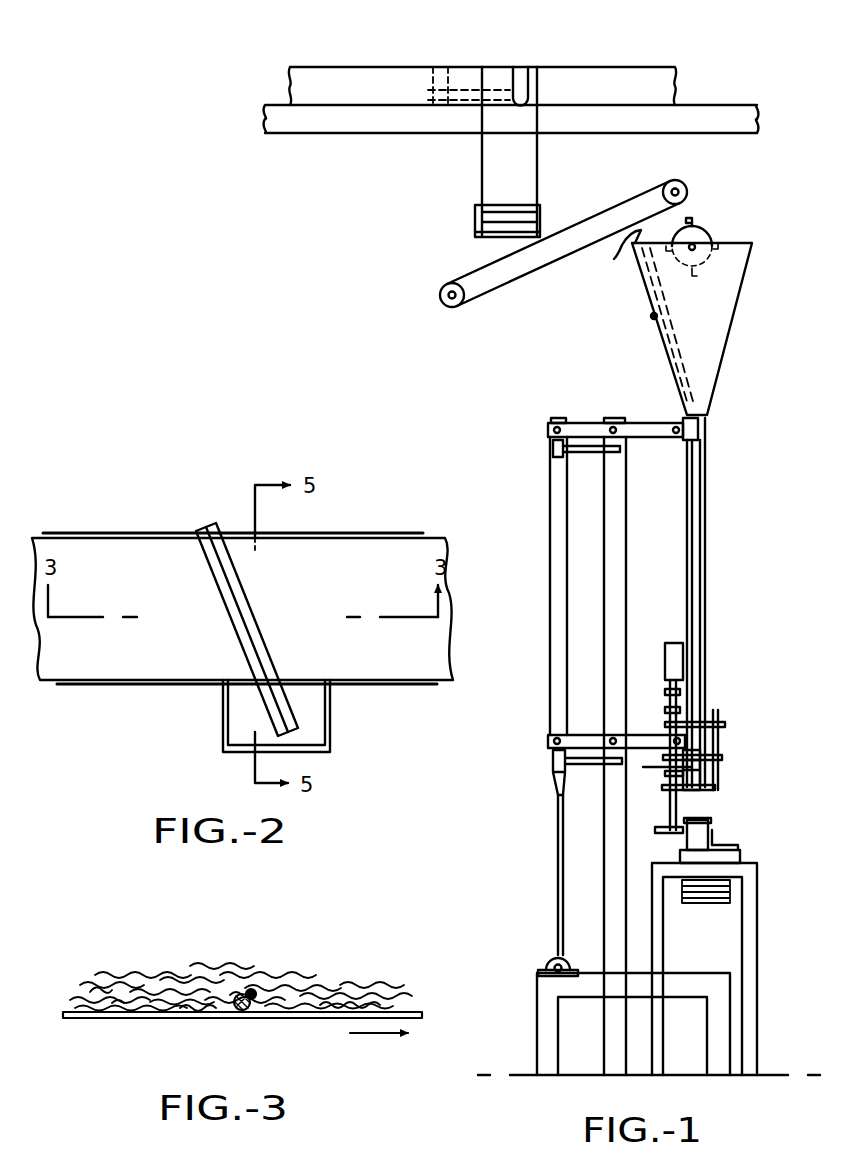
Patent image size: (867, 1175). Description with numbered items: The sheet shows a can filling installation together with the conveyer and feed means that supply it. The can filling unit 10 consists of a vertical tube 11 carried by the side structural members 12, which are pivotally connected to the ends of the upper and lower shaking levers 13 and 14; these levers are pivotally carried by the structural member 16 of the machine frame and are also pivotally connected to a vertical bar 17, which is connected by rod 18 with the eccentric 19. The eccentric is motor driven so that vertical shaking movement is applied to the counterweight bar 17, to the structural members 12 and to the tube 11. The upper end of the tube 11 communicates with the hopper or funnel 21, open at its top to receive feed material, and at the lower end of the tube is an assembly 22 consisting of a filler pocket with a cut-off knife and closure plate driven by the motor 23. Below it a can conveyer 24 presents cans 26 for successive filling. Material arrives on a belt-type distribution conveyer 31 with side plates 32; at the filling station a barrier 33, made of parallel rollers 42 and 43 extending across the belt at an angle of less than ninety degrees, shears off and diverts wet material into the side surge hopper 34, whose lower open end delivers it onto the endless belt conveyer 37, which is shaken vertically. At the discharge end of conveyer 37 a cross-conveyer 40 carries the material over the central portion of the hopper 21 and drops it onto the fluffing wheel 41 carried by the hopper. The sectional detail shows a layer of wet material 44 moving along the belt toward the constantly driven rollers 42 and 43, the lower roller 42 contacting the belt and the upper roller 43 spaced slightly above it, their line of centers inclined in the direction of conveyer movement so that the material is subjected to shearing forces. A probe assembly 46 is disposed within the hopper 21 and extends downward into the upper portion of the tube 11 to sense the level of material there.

In FIG. 1, the can filling unit 10 is at (722, 622).
In FIG. 1, the vertical tube 11 is at (707, 528).
In FIG. 1, the side structural members 12 is at (697, 575).
In FIG. 1, the upper shaking lever 13 is at (641, 423).
In FIG. 1, the lower shaking lever 14 is at (640, 735).
In FIG. 1, the structural member 16 is at (615, 523).
In FIG. 1, the vertical bar 17 is at (555, 490).
In FIG. 1, the rod 18 is at (557, 863).
In FIG. 1, the eccentric 19 is at (551, 960).
In FIG. 1, the hopper 21 is at (728, 309).
In FIG. 1, the assembly 22 is at (731, 745).
In FIG. 1, the motor 23 is at (675, 640).
In FIG. 1, the can conveyer 24 is at (723, 854).
In FIG. 1, the cans 26 is at (700, 828).
In FIG. 1, the distribution conveyer 31 is at (317, 107).
In FIG. 2, the distribution conveyer 31 is at (97, 553).
In FIG. 3, the distribution conveyer 31 is at (173, 1018).
In FIG. 1, the side plates 32 is at (398, 72).
In FIG. 2, the side plates 32 is at (165, 536).
In FIG. 1, the barrier 33 is at (496, 76).
In FIG. 2, the barrier 33 is at (256, 588).
In FIG. 3, the barrier 33 is at (234, 980).
In FIG. 1, the side surge hopper 34 is at (525, 175).
In FIG. 2, the side surge hopper 34 is at (327, 717).
In FIG. 1, the endless belt conveyer 37 is at (533, 230).
In FIG. 1, the cross-conveyer 40 is at (522, 268).
In FIG. 1, the fluffing wheel 41 is at (713, 238).
In FIG. 2, the roller 42 is at (242, 633).
In FIG. 3, the roller 42 is at (251, 1008).
In FIG. 2, the roller 43 is at (252, 623).
In FIG. 3, the roller 43 is at (263, 989).
In FIG. 3, the wet material 44 is at (116, 980).
In FIG. 1, the probe assembly 46 is at (650, 316).